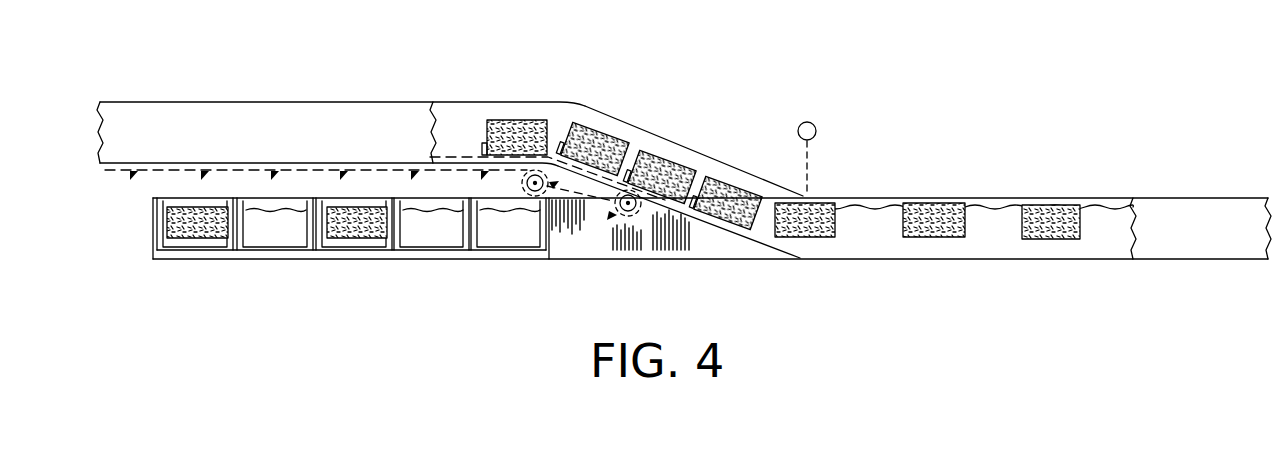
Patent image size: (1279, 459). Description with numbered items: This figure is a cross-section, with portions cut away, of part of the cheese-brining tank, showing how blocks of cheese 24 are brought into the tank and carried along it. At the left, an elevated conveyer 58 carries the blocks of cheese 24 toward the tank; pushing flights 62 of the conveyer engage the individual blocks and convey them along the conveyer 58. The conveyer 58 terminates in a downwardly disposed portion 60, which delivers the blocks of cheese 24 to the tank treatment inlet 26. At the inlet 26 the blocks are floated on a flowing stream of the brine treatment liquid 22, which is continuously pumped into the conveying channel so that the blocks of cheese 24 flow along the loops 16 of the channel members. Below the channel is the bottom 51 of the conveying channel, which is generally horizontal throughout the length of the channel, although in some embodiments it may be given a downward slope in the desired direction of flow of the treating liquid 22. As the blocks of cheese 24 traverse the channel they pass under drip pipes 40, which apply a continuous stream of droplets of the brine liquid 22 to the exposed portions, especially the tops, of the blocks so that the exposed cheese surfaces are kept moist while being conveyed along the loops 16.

The elevated conveyer 58 is at (297, 100).
The pushing flights 62 is at (487, 152).
The downwardly disposed portion 60 is at (668, 142).
The drip pipes 40 is at (800, 123).
The tank treatment inlet 26 is at (815, 197).
The blocks of cheese 24 is at (183, 240).
The loops 16 is at (262, 245).
The bottom of conveying channel 51 is at (345, 245).
The brine treatment liquid 22 is at (995, 235).